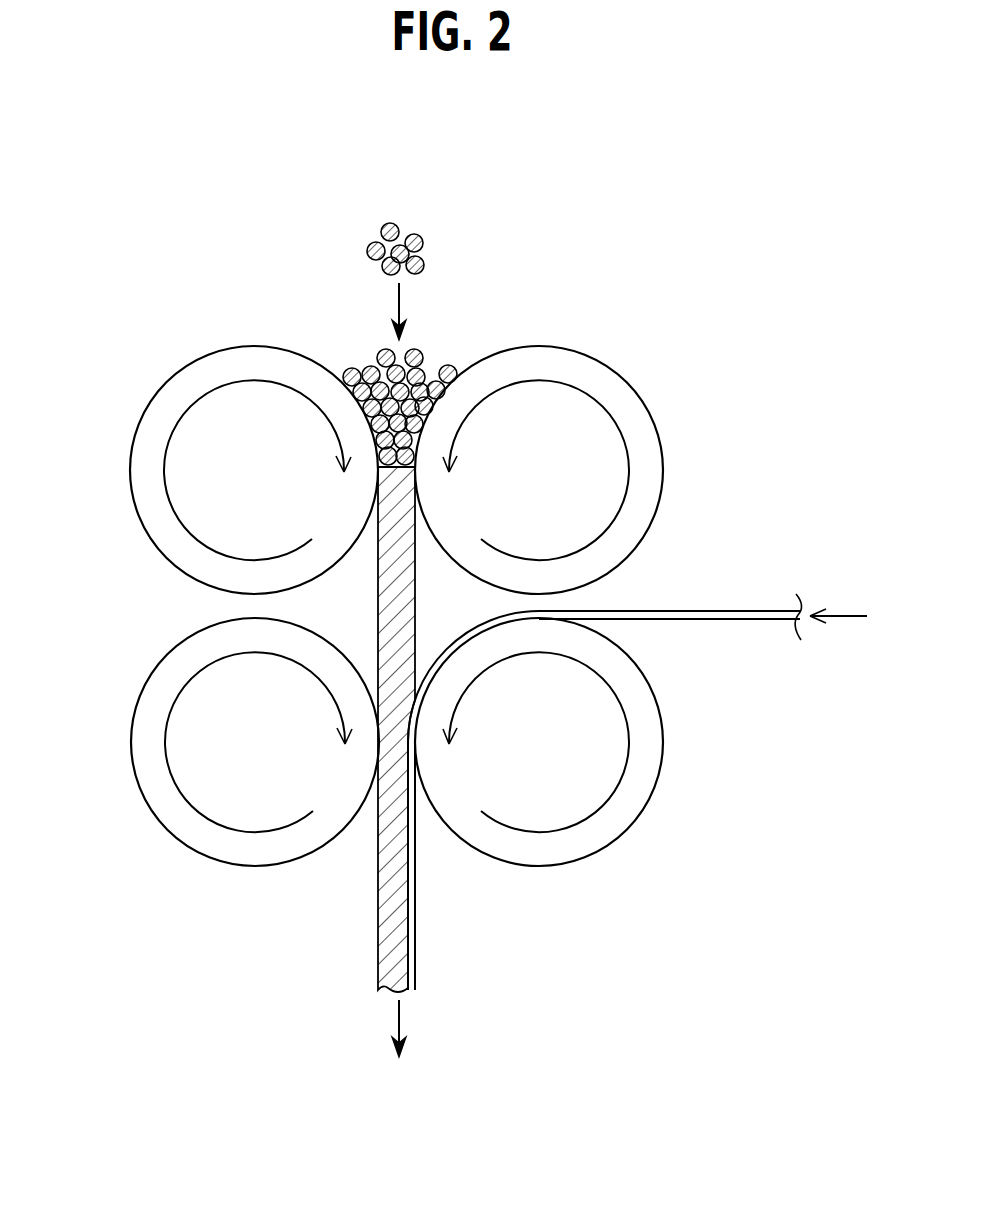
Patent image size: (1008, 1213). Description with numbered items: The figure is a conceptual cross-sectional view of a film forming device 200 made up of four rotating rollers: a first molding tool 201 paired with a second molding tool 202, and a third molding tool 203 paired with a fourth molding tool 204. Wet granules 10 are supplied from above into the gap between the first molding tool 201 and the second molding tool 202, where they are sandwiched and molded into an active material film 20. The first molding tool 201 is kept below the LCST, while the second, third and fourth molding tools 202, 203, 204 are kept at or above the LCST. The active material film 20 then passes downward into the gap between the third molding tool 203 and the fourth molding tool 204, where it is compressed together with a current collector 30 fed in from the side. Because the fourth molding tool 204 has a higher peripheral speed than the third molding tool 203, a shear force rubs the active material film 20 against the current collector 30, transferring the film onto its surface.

The wet granules 10 is at (425, 249).
The active material film 20 is at (378, 593).
The current collector 30 is at (713, 622).
The film forming device 200 is at (662, 328).
The first molding tool 201 is at (137, 476).
The second molding tool 202 is at (655, 487).
The third molding tool 203 is at (137, 748).
The fourth molding tool 204 is at (655, 756).